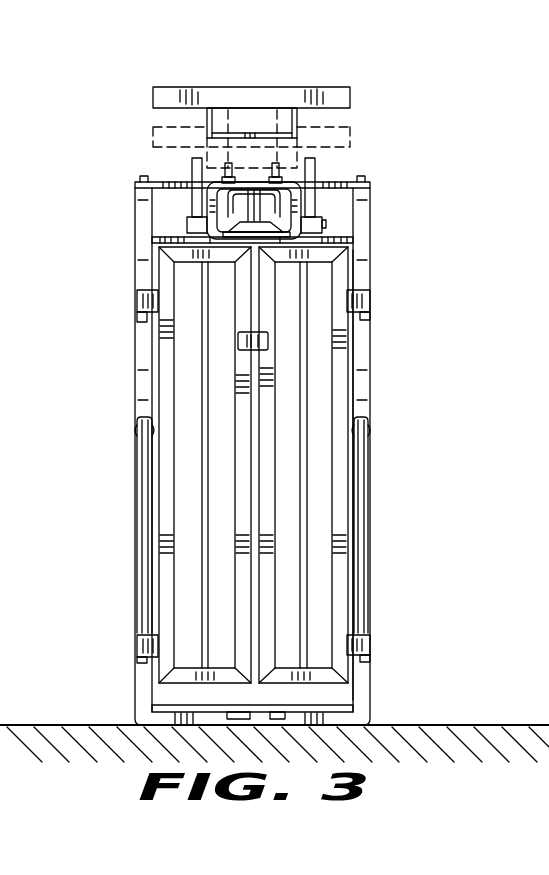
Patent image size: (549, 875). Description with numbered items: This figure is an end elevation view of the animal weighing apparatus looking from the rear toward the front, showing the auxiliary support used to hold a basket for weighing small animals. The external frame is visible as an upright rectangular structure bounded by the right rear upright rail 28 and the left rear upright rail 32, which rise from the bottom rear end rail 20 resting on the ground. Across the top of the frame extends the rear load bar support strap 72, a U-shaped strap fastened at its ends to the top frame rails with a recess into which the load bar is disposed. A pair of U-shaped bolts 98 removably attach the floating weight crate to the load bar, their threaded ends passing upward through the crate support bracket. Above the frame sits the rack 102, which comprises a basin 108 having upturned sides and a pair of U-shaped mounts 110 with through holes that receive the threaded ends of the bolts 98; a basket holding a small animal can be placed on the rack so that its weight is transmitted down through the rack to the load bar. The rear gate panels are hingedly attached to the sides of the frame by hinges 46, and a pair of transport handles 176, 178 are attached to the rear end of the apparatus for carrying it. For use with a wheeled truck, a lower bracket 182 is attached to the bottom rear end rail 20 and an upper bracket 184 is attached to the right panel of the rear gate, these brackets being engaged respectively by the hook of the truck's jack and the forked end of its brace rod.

The bottom rear end rail 20 is at (365, 731).
The right rear upright rail 28 is at (134, 255).
The left rear upright rail 32 is at (368, 227).
The hinges 46 is at (140, 302).
The rear load bar support strap 72 is at (344, 175).
The U-shaped bolts 98 is at (167, 231).
The rack 102 is at (271, 100).
The basin 108 is at (355, 96).
The U-shaped mounts 110 is at (300, 120).
The transport handle 176 is at (140, 503).
The transport handle 178 is at (363, 473).
The lower bracket 182 is at (247, 712).
The upper bracket 184 is at (238, 339).